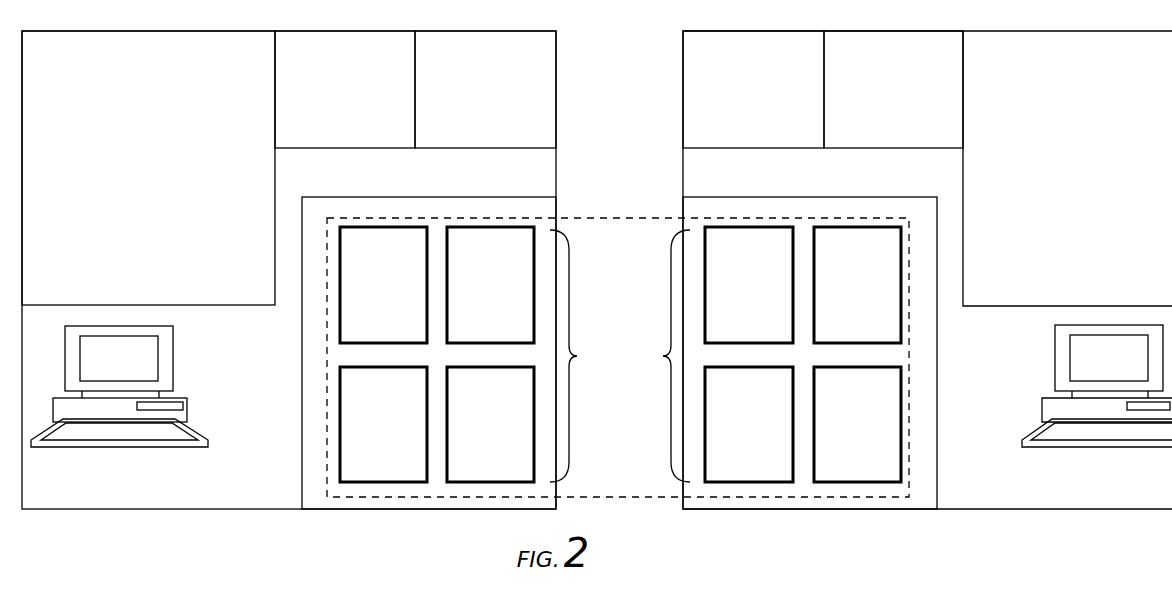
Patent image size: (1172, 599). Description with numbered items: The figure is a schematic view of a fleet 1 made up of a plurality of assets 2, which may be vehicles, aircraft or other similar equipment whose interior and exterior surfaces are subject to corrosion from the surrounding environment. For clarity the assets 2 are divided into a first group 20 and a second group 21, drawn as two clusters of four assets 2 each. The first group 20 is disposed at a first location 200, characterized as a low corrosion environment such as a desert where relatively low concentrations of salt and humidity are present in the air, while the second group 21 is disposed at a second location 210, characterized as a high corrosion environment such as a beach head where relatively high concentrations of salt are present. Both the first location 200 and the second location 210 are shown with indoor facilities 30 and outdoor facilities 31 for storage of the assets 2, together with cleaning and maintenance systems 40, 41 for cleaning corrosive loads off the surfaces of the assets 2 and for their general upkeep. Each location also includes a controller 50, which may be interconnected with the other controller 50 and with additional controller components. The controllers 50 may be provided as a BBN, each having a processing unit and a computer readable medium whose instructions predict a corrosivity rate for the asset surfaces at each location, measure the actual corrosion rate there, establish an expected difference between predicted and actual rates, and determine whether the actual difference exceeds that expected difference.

The fleet 1 is at (630, 497).
The assets 2 is at (398, 463).
The first group 20 is at (577, 356).
The second group 21 is at (663, 356).
The indoor facilities 30 is at (132, 177).
The outdoor facilities 31 is at (302, 357).
The cleaning and maintenance system 40 is at (332, 104).
The cleaning and maintenance system 41 is at (469, 104).
The controller 50 is at (128, 447).
The first location 200 is at (203, 481).
The second location 210 is at (975, 483).